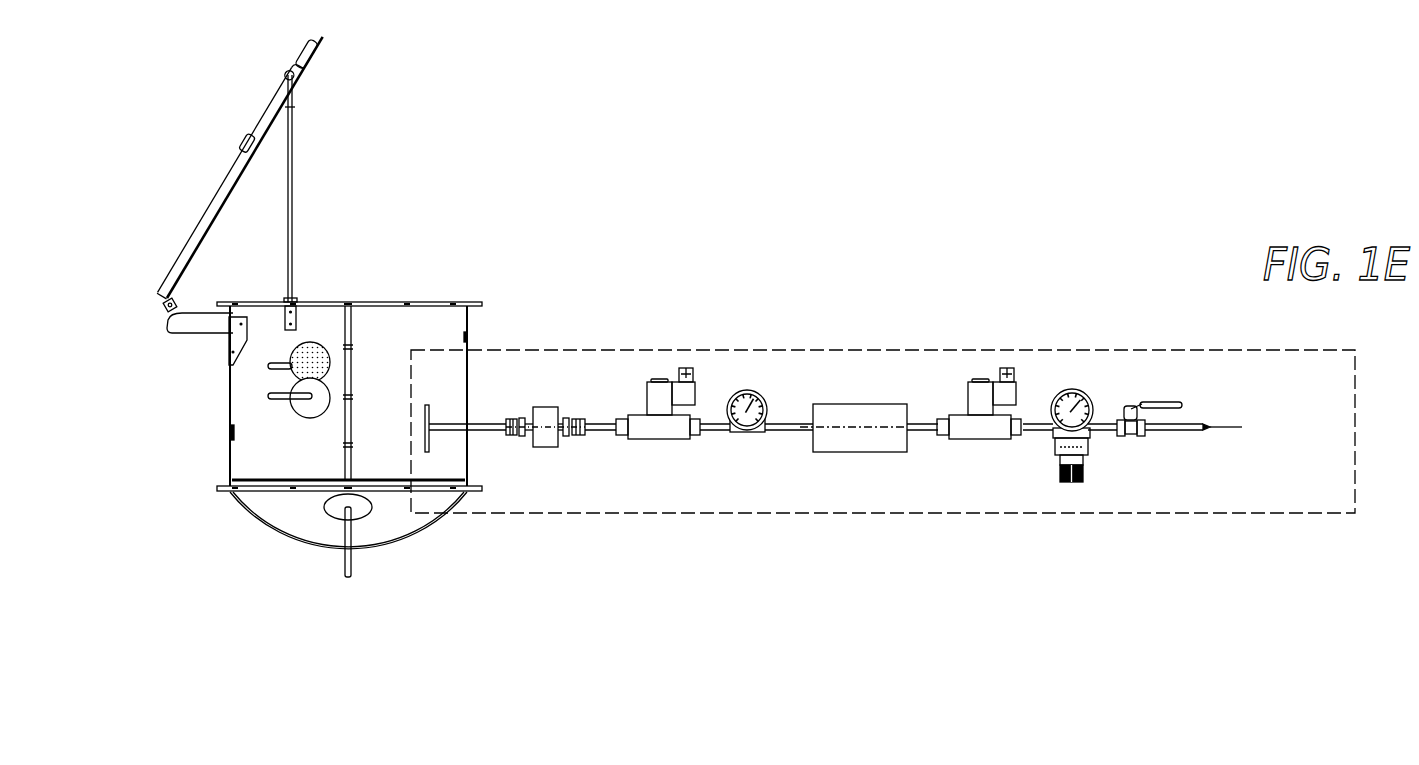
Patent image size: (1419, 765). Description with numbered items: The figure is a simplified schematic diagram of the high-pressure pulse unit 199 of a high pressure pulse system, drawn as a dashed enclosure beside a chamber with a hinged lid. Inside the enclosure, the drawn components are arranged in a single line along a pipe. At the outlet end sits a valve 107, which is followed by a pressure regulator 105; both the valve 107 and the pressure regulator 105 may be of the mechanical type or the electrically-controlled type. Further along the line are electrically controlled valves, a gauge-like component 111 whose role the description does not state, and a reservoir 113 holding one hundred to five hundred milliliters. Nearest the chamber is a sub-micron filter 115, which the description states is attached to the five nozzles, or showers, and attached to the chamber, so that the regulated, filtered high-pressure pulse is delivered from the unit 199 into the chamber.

The pressure regulator 105 is at (1088, 488).
The valve 107 is at (1148, 448).
The pressure gauge 111 is at (751, 443).
The reservoir 113 is at (865, 459).
The sub-micron filter 115 is at (550, 453).
The high-pressure pulse unit 199 is at (918, 350).